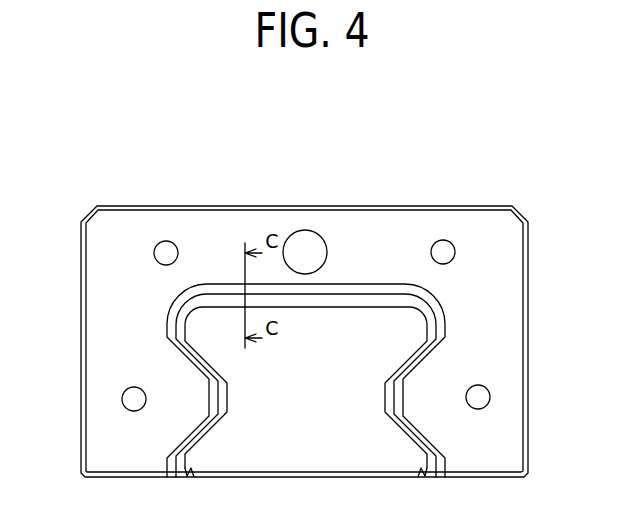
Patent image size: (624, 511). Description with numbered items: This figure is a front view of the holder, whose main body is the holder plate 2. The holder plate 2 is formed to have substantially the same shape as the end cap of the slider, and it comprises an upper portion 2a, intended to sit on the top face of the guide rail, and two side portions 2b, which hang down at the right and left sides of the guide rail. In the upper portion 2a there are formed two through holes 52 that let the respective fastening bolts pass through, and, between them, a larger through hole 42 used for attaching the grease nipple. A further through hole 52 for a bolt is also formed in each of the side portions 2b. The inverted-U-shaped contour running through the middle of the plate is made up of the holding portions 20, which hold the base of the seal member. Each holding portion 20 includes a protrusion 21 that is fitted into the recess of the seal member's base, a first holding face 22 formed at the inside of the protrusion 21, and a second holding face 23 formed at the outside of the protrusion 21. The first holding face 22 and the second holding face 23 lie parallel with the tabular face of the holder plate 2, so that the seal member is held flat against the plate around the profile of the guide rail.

The holder plate 2 is at (491, 204).
The upper portion 2a is at (378, 243).
The side portions 2b is at (125, 352).
The through hole 42 is at (323, 242).
The through holes 52 is at (171, 245).
The holding portions 20 is at (306, 380).
The protrusion 21 is at (327, 297).
The first holding face 22 is at (373, 380).
The second holding face 23 is at (355, 287).